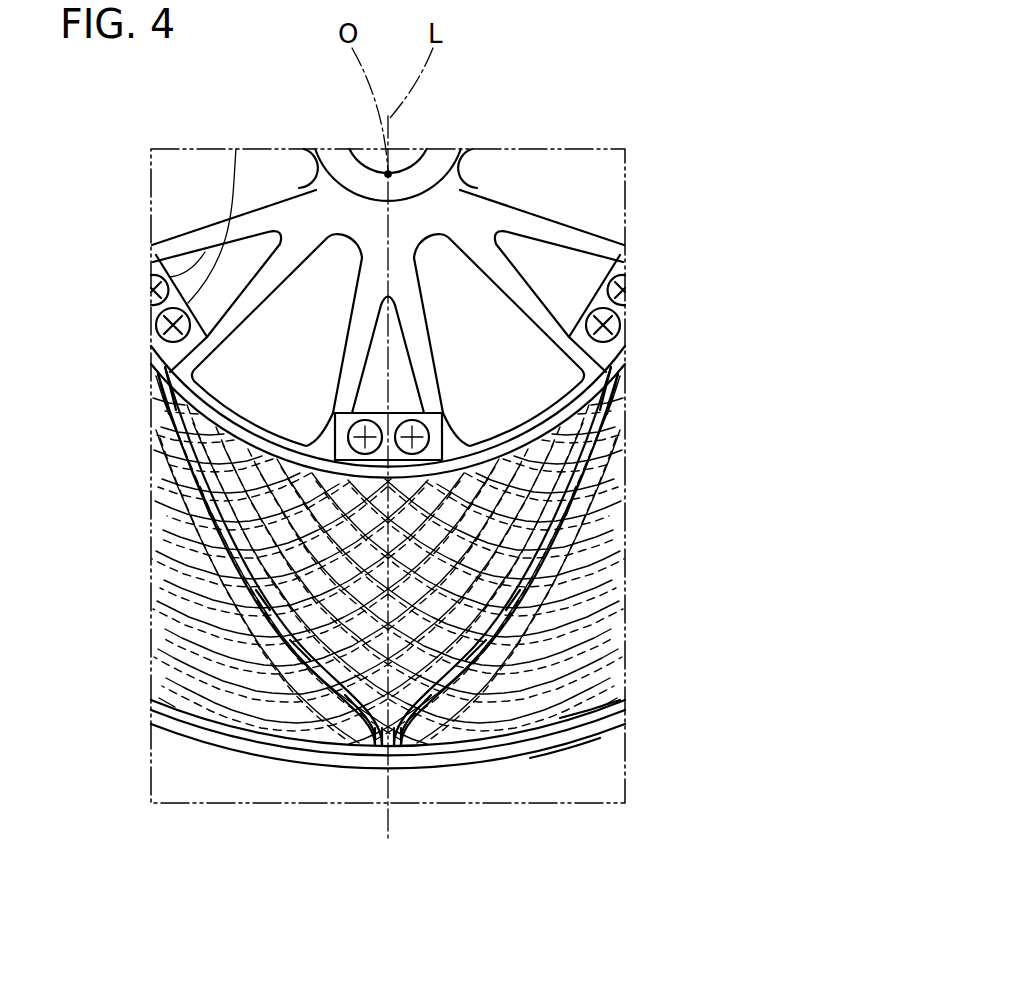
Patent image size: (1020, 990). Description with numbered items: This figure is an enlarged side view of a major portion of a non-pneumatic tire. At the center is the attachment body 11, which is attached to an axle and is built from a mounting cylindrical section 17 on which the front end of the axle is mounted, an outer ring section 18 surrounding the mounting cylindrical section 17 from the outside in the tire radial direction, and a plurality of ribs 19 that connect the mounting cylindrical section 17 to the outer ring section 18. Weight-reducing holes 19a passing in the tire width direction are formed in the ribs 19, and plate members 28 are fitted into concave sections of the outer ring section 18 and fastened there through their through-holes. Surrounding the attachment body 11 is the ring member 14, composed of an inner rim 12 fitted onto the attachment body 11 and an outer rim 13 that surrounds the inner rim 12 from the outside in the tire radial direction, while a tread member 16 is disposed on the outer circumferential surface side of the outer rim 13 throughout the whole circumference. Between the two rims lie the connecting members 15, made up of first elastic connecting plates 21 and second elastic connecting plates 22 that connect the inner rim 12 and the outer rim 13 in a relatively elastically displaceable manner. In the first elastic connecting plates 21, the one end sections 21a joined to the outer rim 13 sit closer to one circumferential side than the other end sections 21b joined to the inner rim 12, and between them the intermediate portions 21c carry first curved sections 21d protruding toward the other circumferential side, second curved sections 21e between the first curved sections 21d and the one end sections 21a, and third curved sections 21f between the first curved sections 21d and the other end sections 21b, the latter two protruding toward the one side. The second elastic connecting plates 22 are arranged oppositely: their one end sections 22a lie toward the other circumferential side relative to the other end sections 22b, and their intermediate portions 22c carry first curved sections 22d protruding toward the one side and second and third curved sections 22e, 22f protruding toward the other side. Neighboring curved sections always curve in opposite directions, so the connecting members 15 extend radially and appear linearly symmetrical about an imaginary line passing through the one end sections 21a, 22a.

The attachment body 11 is at (638, 62).
The inner rim 12 is at (213, 422).
The outer rim 13 is at (196, 721).
The ring member 14 is at (590, 721).
The connecting members 15 is at (560, 924).
The tread member 16 is at (561, 749).
The mounting cylindrical section 17 is at (456, 174).
The outer ring section 18 is at (522, 400).
The ribs 19 is at (528, 210).
The weight-reducing holes 19a is at (178, 275).
The first elastic connecting plates 21 is at (297, 683).
The one end sections 21a is at (398, 748).
The other end sections 21b is at (165, 378).
The intermediate portions 21c is at (250, 650).
The first curved sections 21d is at (265, 600).
The second curved sections 21e is at (365, 727).
The third curved sections 21f is at (200, 500).
The second elastic connecting plates 22 is at (479, 683).
The one end sections 22a is at (378, 748).
The other end sections 22b is at (612, 380).
The intermediate portions 22c is at (560, 650).
The first curved sections 22d is at (500, 622).
The second curved sections 22e is at (411, 727).
The third curved sections 22f is at (575, 505).
The plate members 28 is at (236, 149).